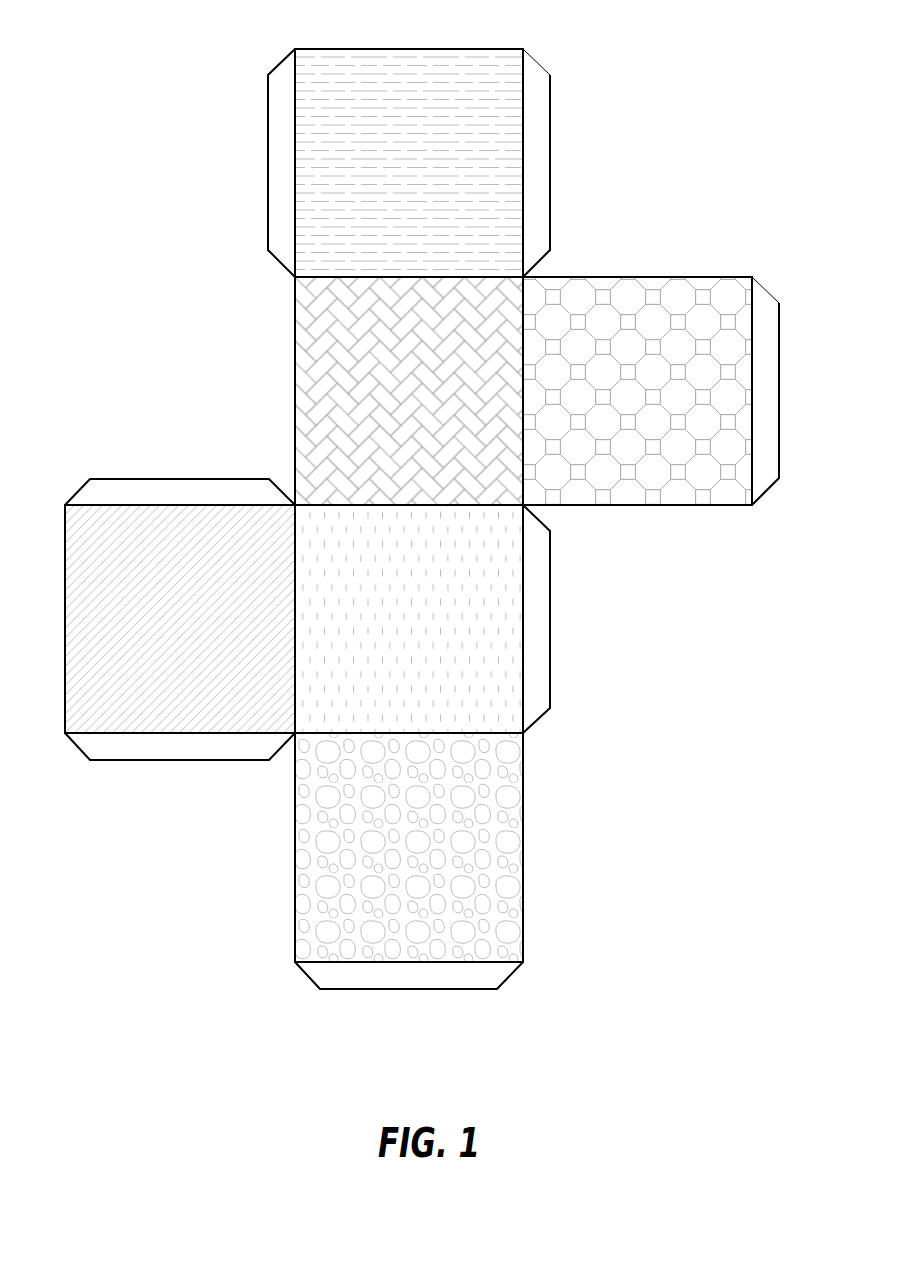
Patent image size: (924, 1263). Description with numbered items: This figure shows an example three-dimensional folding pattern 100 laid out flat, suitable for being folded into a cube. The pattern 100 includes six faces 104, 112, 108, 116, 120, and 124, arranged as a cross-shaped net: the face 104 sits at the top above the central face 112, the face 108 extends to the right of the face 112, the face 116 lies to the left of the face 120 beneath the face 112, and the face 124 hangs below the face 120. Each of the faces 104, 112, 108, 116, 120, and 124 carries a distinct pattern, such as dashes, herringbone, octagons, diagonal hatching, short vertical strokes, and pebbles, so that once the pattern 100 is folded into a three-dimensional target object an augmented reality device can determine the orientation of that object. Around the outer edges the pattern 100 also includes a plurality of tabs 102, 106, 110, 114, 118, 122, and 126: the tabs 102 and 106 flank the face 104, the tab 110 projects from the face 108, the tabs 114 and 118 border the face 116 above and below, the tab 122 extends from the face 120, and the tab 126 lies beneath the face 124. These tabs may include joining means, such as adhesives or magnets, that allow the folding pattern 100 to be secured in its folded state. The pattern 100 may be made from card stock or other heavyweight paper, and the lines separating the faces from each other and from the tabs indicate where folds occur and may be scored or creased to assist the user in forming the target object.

The three-dimensional folding pattern 100 is at (150, 38).
The tab 102 is at (282, 236).
The face 104 is at (368, 62).
The tab 106 is at (533, 170).
The face 108 is at (675, 290).
The tab 110 is at (763, 463).
The face 112 is at (310, 388).
The tab 114 is at (122, 490).
The face 116 is at (85, 692).
The tab 118 is at (156, 745).
The face 120 is at (508, 708).
The tab 122 is at (535, 602).
The face 124 is at (498, 895).
The tab 126 is at (330, 980).